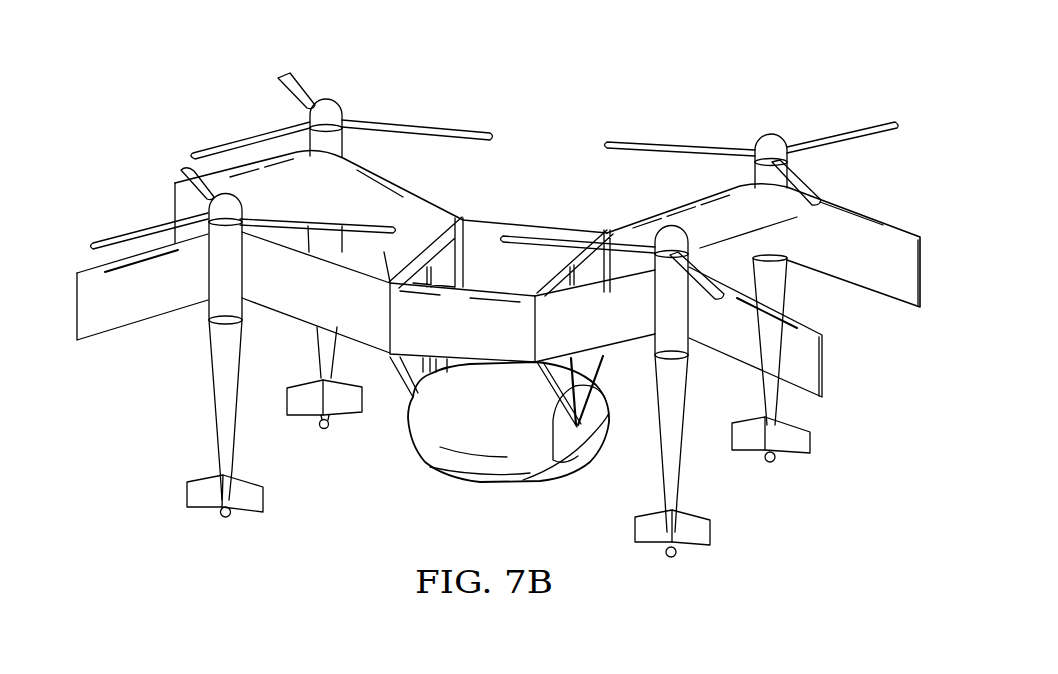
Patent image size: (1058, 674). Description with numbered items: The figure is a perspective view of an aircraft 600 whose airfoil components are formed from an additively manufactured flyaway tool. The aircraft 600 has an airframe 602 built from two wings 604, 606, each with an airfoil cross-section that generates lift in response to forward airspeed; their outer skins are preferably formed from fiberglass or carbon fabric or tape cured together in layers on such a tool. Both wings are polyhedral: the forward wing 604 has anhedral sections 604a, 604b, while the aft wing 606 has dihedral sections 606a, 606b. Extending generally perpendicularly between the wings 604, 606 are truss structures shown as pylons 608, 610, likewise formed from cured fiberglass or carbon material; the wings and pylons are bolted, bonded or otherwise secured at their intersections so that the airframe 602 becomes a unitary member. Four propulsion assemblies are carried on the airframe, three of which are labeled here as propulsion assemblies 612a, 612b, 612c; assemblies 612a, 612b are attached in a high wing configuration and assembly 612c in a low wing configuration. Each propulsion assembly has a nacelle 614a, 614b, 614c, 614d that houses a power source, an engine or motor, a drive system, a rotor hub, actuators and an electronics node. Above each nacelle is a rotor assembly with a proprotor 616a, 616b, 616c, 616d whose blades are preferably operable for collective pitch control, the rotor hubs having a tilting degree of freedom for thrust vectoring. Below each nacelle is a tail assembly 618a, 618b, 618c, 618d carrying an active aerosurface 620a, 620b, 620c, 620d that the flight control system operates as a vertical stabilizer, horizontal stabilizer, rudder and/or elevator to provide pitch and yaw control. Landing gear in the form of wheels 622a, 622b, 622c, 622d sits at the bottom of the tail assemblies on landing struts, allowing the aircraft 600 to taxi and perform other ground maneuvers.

The aircraft 600 is at (573, 102).
The airframe 602 is at (895, 307).
The wing 604 is at (749, 344).
The anhedral section 604a is at (818, 389).
The anhedral section 604b is at (115, 372).
The wing 606 is at (776, 241).
The dihedral section 606a is at (881, 249).
The dihedral section 606b is at (180, 194).
The pylon 608 is at (612, 236).
The pylon 610 is at (437, 246).
The propulsion assembly 612a is at (652, 318).
The propulsion assembly 612b is at (206, 278).
The propulsion assembly 612c is at (768, 255).
The nacelle 614a is at (677, 453).
The nacelle 614b is at (225, 414).
The nacelle 614c is at (780, 292).
The nacelle 614d is at (334, 248).
The proprotor 616a is at (527, 236).
The proprotor 616b is at (98, 244).
The proprotor 616c is at (877, 128).
The proprotor 616d is at (290, 78).
The tail assembly 618a is at (640, 528).
The tail assembly 618b is at (195, 492).
The tail assembly 618c is at (738, 433).
The tail assembly 618d is at (290, 396).
The active aerosurface 620a is at (702, 536).
The active aerosurface 620b is at (260, 503).
The active aerosurface 620c is at (800, 440).
The active aerosurface 620d is at (353, 410).
The wheel 622a is at (675, 559).
The wheel 622b is at (228, 518).
The wheel 622c is at (774, 464).
The wheel 622d is at (322, 428).